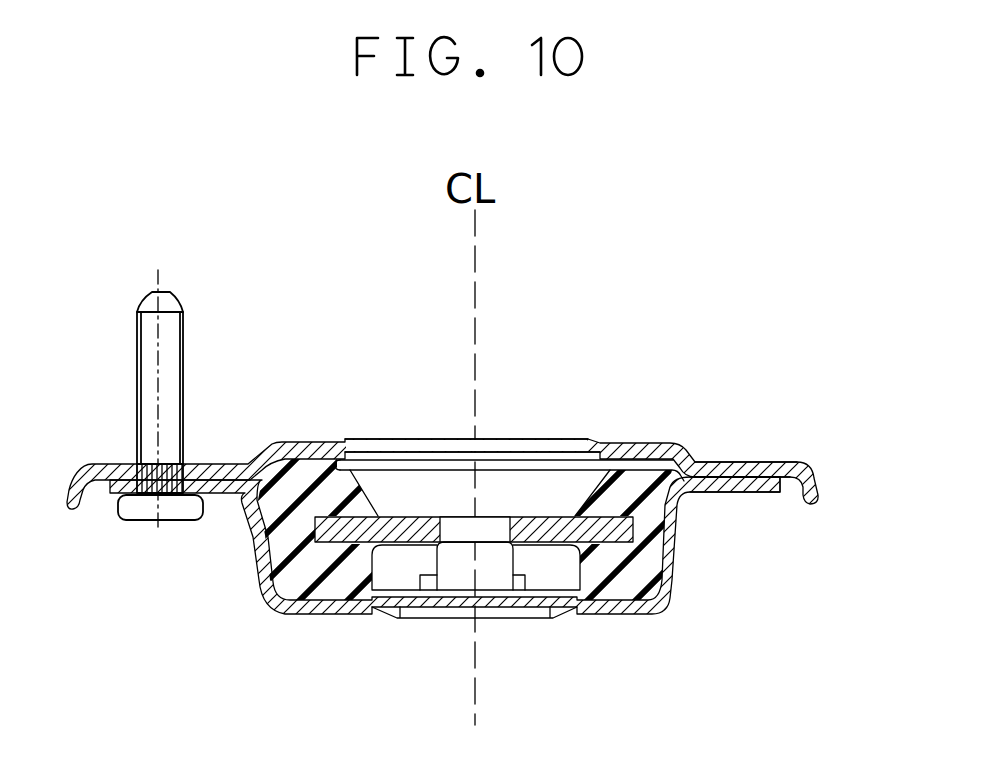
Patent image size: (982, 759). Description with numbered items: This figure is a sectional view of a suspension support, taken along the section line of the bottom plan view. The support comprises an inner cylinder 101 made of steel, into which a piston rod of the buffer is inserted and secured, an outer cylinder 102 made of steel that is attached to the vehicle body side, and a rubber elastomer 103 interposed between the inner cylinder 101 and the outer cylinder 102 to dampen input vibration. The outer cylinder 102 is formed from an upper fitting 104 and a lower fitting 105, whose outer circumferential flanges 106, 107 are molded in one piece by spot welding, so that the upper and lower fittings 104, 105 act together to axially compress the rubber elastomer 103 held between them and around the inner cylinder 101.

The inner cylinder 101 is at (527, 503).
The outer cylinder 102 is at (463, 472).
The rubber elastomer 103 is at (592, 570).
The upper fitting 104 is at (463, 421).
The lower fitting 105 is at (477, 559).
The outer circumferential flange 106 is at (758, 462).
The outer circumferential flange 107 is at (752, 485).